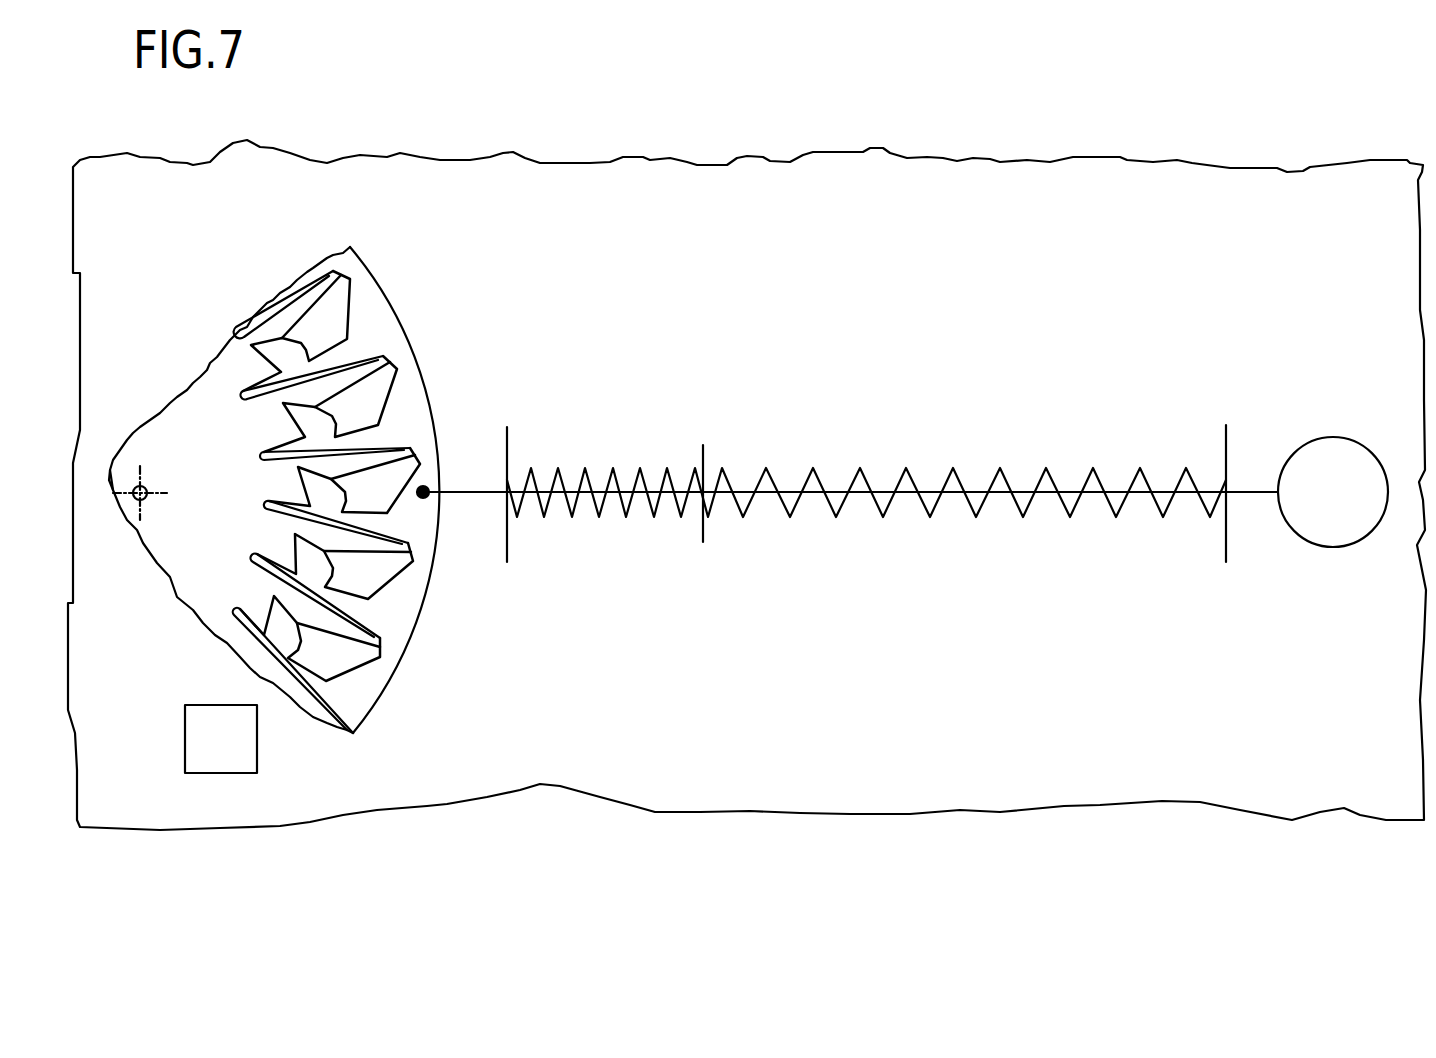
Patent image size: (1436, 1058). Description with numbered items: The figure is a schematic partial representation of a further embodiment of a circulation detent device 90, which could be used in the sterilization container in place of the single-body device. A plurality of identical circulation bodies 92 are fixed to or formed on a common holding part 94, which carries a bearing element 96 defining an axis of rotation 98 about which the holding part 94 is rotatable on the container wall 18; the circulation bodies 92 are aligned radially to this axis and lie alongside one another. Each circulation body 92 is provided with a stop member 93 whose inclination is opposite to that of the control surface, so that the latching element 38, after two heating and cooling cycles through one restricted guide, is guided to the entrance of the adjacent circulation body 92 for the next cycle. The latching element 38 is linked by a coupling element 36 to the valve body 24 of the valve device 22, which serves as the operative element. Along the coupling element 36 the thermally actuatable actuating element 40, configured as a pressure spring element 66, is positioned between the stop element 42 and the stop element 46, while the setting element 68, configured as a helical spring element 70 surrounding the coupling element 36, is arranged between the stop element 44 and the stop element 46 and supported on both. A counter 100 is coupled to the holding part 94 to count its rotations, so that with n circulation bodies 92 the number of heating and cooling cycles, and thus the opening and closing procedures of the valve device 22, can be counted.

The container wall 18 is at (747, 535).
The valve device 22 is at (1367, 361).
The valve body 24 is at (1333, 535).
The coupling element 36 is at (850, 536).
The latching element 38 is at (457, 532).
The actuating element 40 is at (866, 533).
The stop element 42 is at (1269, 461).
The stop element 44 is at (544, 459).
The stop element 46 is at (744, 465).
The spring element 66 is at (949, 555).
The setting element 68 is at (561, 562).
The spring element 70 is at (689, 564).
The circulation detent device 90 is at (1209, 287).
The circulation body 92 is at (372, 512).
The stop member 93 is at (368, 503).
The holding part 94 is at (274, 490).
The bearing element 96 is at (161, 466).
The axis of rotation 98 is at (114, 433).
The counter 100 is at (221, 805).